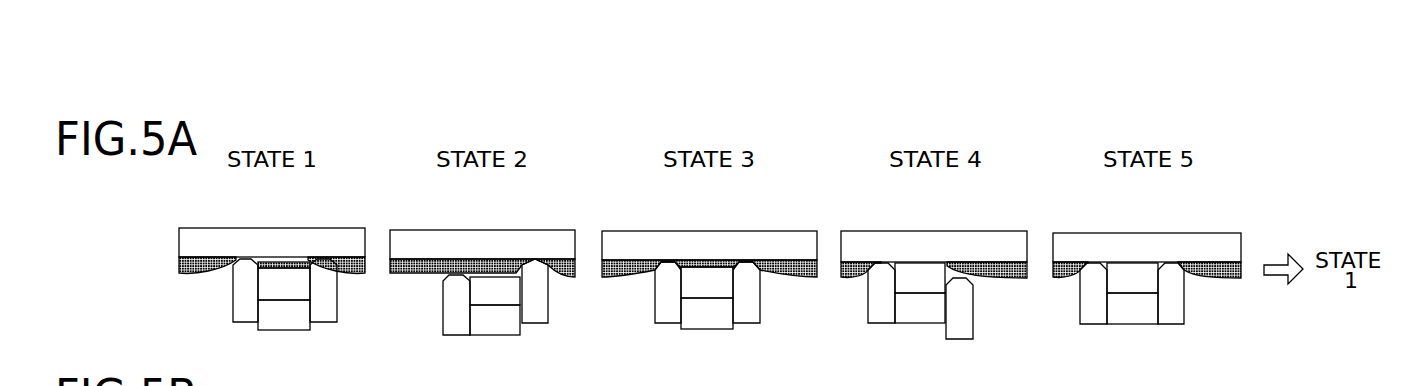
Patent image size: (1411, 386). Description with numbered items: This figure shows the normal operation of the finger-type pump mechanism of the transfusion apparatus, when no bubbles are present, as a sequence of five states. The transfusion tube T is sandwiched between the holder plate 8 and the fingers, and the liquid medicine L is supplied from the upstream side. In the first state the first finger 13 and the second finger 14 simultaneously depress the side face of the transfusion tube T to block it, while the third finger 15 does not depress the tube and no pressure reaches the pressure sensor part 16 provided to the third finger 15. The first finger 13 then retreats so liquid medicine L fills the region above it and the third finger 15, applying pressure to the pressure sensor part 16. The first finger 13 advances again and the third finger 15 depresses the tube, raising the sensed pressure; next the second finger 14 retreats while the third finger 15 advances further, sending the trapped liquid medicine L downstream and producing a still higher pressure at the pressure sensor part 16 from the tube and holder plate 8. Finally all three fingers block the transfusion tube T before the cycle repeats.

The holder plate 8 is at (341, 228).
The first finger 13 is at (246, 323).
The second finger 14 is at (326, 323).
The third finger 15 is at (288, 331).
The pressure sensor part 16 is at (287, 287).
The liquid medicine L is at (180, 257).
The transfusion tube T is at (183, 277).